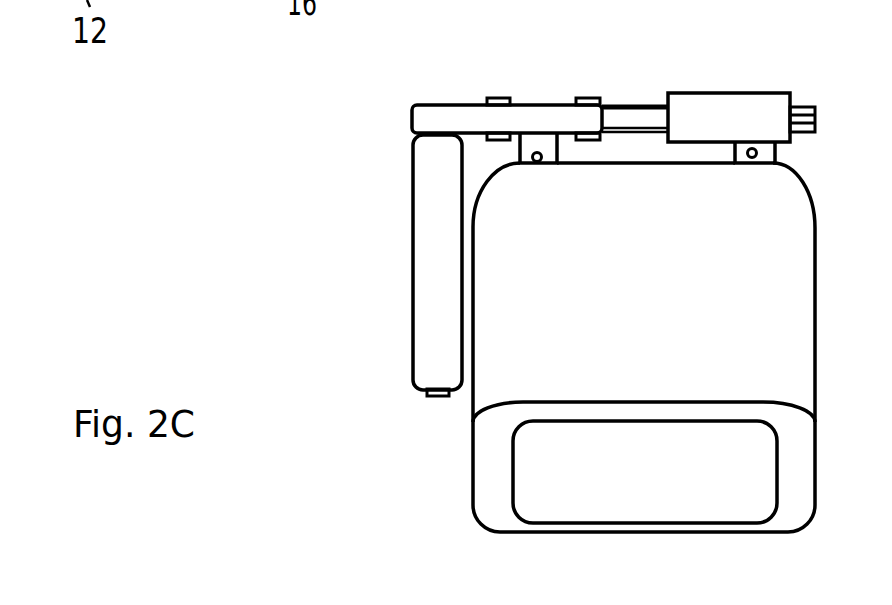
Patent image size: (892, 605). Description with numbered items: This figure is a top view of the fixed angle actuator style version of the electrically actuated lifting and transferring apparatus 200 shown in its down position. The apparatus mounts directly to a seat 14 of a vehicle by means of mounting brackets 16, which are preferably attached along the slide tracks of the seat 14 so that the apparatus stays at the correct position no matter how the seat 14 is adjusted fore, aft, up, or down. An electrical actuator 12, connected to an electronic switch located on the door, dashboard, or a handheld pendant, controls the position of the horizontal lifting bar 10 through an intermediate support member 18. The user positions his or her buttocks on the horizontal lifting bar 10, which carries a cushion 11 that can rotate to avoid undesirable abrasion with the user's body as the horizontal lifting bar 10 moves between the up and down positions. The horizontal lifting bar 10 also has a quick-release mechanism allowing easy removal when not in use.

The electrically actuated lifting and transferring apparatus 200 is at (200, 241).
The horizontal lifting bar 10 is at (440, 389).
The cushion 11 is at (436, 318).
The electrical actuator 12 is at (767, 115).
The seat 14 is at (525, 383).
The mounting brackets 16 is at (540, 143).
The intermediate support member 18 is at (443, 123).